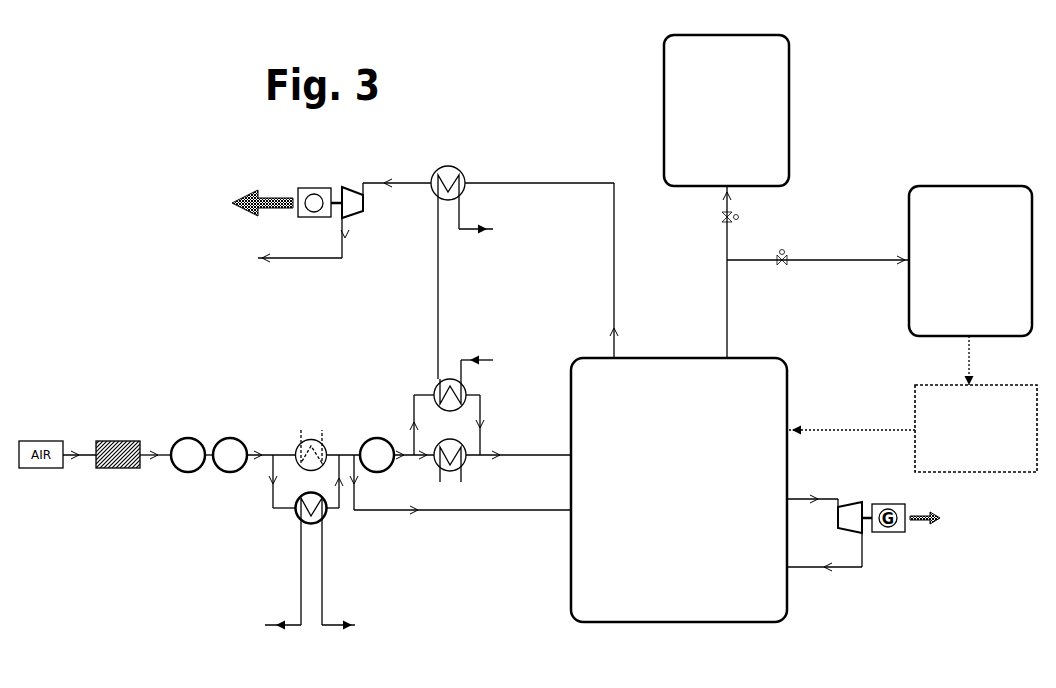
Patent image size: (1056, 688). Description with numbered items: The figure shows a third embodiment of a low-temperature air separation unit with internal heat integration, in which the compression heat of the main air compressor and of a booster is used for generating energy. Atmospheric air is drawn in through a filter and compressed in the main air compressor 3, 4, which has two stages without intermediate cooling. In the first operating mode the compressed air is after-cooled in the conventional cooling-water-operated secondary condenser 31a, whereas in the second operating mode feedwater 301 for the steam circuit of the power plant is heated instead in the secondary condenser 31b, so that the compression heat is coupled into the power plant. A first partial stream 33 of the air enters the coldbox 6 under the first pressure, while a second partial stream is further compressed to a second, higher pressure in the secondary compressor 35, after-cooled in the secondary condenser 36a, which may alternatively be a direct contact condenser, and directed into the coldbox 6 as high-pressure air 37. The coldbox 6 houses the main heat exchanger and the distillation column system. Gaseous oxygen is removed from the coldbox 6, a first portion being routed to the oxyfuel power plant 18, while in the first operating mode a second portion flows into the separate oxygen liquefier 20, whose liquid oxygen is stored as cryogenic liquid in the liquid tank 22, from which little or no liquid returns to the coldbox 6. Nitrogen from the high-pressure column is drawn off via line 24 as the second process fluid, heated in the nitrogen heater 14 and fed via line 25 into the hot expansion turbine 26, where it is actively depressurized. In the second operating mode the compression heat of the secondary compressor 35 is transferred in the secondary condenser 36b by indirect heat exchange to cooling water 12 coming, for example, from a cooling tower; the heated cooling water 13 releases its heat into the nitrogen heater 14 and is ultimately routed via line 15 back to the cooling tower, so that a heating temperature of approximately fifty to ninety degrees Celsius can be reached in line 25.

The main air compressor stage 3 is at (200, 469).
The main air compressor stage 4 is at (241, 469).
The coldbox 6 is at (679, 490).
The cooling water 12 is at (469, 358).
The heated cooling water 13 is at (440, 285).
The nitrogen heater 14 is at (446, 167).
The line 15 is at (491, 232).
The oxyfuel power plant 18 is at (726, 110).
The oxygen liquefier 20 is at (970, 261).
The liquid tank 22 is at (976, 428).
The line 24 is at (612, 224).
The line 25 is at (363, 181).
The hot expansion turbine 26 is at (358, 216).
The secondary condenser 31a is at (312, 433).
The secondary condenser 31b is at (298, 516).
The first partial stream 33 is at (519, 512).
The secondary compressor 35 is at (386, 440).
The secondary condenser 36a is at (437, 463).
The secondary condenser 36b is at (466, 385).
The high-pressure air 37 is at (535, 453).
The feedwater 301 is at (323, 556).